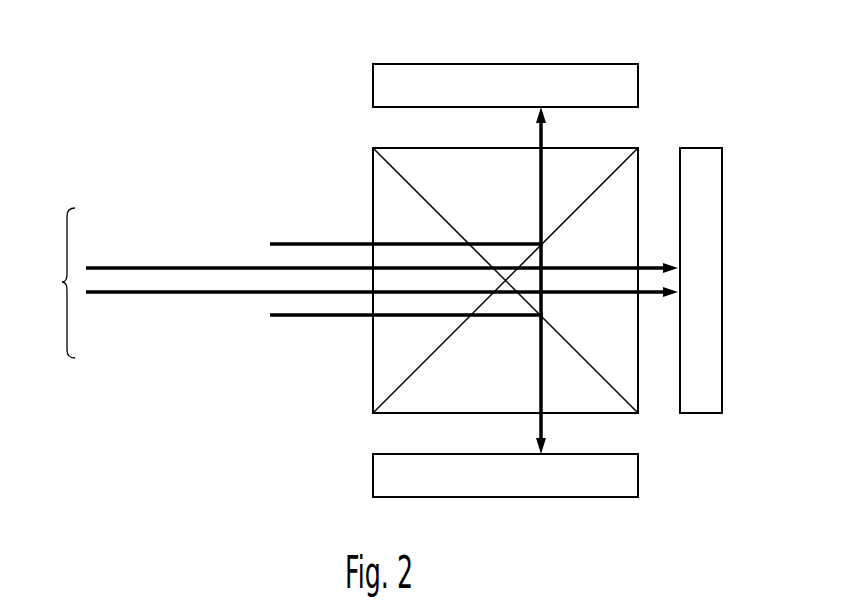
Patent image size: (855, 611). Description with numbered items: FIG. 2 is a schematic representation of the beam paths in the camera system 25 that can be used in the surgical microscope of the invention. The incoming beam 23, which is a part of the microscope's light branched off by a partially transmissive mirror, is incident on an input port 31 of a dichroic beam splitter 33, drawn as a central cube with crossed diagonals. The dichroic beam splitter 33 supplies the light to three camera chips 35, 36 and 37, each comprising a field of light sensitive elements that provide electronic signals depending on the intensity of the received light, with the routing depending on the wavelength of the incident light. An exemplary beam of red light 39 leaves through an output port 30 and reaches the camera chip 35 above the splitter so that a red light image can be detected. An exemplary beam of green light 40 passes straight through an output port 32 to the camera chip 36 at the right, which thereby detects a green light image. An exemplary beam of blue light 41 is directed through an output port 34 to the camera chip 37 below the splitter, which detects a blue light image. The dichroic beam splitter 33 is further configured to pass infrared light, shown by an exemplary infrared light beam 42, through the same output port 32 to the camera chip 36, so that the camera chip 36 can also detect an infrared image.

The beam 23 is at (55, 283).
The camera system 25 is at (688, 55).
The output port 30 is at (398, 147).
The input port 31 is at (372, 172).
The output port 32 is at (640, 170).
The dichroic beam splitter 33 is at (364, 400).
The output port 34 is at (616, 413).
The camera chip 35 is at (583, 64).
The camera chip 36 is at (700, 148).
The camera chip 37 is at (638, 478).
The beam of red light 39 is at (297, 243).
The beam of green light 40 is at (126, 266).
The beam of blue light 41 is at (298, 317).
The infrared light beam 42 is at (126, 294).